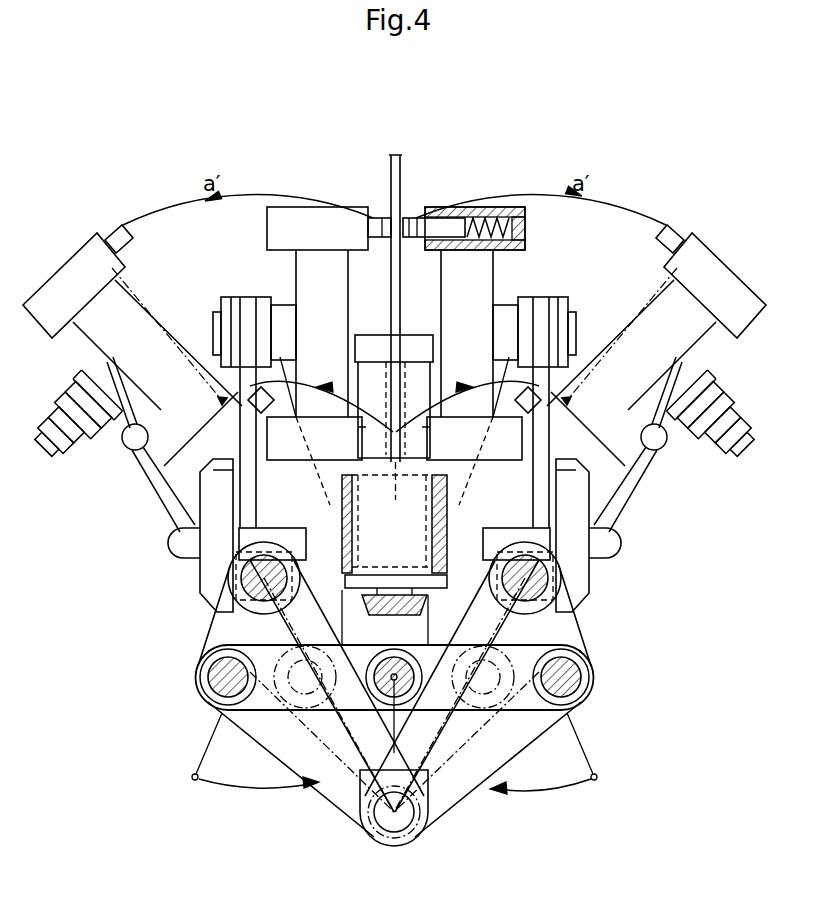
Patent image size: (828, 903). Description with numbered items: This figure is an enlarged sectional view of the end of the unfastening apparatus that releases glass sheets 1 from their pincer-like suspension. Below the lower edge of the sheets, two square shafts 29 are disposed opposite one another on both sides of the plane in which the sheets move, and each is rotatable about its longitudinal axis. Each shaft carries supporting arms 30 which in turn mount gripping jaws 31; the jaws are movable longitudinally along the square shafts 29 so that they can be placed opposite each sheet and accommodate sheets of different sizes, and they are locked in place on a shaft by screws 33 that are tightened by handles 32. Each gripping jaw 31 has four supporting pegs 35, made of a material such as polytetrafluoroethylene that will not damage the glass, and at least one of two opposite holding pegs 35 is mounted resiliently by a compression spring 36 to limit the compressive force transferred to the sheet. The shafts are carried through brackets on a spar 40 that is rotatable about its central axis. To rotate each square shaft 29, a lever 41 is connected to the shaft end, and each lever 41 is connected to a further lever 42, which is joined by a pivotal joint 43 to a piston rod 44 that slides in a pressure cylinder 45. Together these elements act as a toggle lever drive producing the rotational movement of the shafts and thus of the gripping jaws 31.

The glass sheet 1 is at (401, 166).
The square shaft 29 is at (298, 597).
The supporting arm 30 is at (240, 503).
The gripping jaw 31 is at (292, 278).
The handle 32 is at (170, 501).
The screw 33 is at (185, 548).
The supporting peg 35 is at (131, 249).
The compression spring 36 is at (497, 216).
The spar 40 is at (449, 512).
The lever 41 is at (216, 630).
The lever 42 is at (268, 702).
The pivotal joint 43 is at (397, 684).
The piston rod 44 is at (397, 594).
The pressure cylinder 45 is at (413, 355).